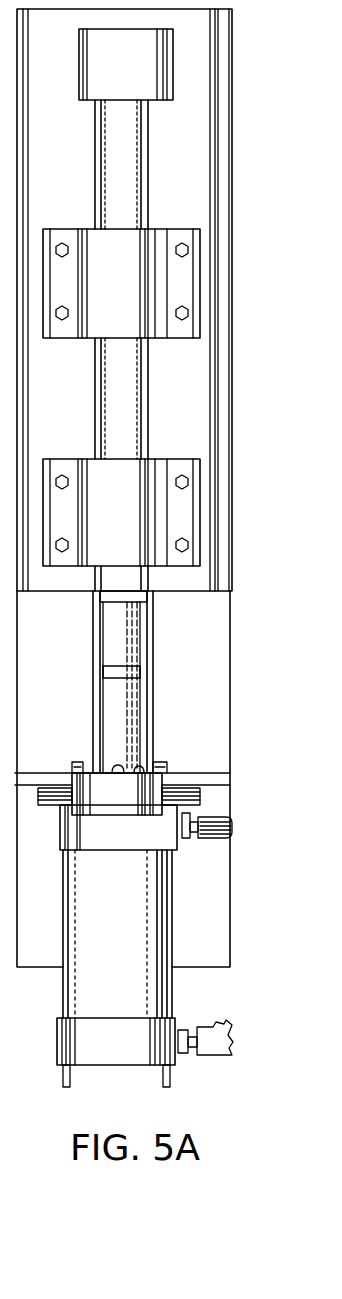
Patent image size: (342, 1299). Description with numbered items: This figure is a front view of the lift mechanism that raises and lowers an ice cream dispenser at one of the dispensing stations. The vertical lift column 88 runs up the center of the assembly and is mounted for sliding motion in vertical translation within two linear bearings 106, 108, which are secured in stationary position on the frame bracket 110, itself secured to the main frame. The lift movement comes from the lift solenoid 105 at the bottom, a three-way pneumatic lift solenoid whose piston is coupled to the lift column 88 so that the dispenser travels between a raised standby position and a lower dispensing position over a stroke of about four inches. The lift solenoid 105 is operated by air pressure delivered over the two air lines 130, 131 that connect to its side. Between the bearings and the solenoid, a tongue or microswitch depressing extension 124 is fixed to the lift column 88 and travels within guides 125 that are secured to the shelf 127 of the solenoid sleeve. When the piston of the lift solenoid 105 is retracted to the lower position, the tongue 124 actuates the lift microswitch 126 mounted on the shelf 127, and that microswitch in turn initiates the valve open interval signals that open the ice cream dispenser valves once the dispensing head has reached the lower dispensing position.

The lift column 88 is at (148, 143).
The lift solenoid 105 is at (152, 995).
The linear bearing 106 is at (135, 523).
The linear bearing 108 is at (136, 291).
The frame bracket 110 is at (200, 414).
The tongue or microswitch depressing extension 124 is at (120, 672).
The guides 125 is at (153, 633).
The lift microswitch 126 is at (117, 770).
The shelf 127 is at (139, 770).
The air line 130 is at (212, 840).
The air line 131 is at (232, 1053).